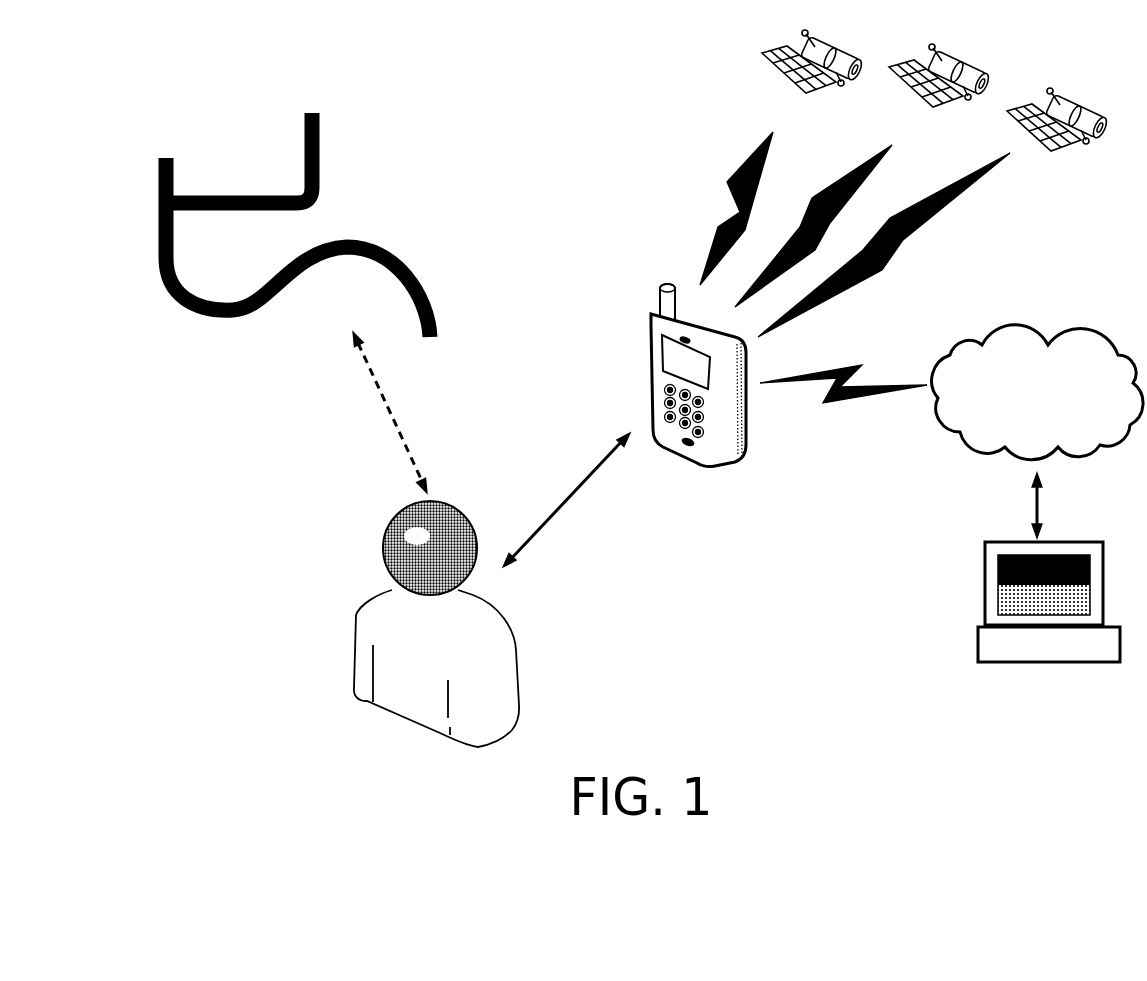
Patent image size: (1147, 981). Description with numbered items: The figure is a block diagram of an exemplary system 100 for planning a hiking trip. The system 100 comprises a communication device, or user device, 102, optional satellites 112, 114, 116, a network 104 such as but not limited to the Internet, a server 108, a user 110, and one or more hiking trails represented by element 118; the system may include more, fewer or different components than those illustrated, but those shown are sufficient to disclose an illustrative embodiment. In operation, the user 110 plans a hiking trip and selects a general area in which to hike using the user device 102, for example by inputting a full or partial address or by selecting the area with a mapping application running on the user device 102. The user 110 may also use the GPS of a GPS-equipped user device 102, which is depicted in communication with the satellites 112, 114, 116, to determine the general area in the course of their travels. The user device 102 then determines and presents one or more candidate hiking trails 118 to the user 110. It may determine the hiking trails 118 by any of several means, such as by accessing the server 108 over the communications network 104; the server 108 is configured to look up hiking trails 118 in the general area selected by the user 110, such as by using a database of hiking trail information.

The system 100 is at (576, 100).
The communication device 102 is at (697, 526).
The network 104 is at (1026, 416).
The server 108 is at (1085, 695).
The user 110 is at (612, 670).
The satellite 112 is at (856, 123).
The satellite 114 is at (988, 138).
The satellite 116 is at (1115, 181).
The hiking trail 118 is at (449, 240).